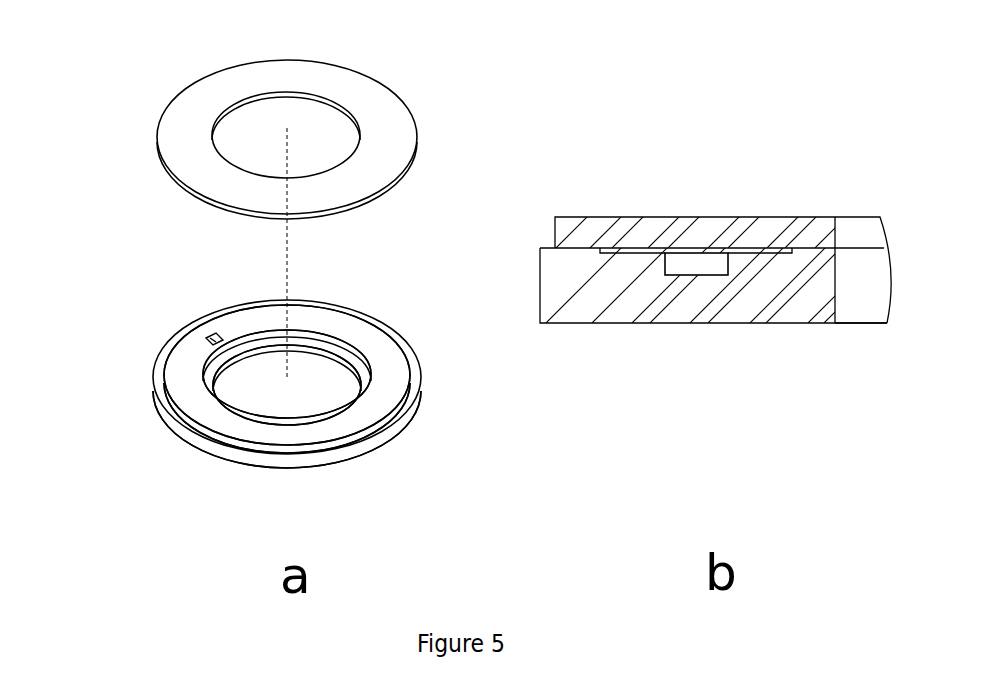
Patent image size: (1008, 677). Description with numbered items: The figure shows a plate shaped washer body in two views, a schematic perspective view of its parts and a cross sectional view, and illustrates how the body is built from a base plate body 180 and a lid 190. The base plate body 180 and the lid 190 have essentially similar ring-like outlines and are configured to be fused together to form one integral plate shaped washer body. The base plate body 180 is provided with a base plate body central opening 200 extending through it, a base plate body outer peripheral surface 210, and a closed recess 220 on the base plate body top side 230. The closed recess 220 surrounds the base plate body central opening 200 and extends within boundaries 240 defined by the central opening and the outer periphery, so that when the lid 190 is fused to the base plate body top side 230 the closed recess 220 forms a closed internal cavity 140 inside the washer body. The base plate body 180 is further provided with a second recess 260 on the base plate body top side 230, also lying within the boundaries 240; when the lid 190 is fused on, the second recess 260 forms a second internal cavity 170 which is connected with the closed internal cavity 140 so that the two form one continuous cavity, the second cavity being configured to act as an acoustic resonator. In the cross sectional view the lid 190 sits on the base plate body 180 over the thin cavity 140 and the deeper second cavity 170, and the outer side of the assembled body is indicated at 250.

The closed internal cavity 140 is at (748, 252).
The second internal cavity 170 is at (697, 263).
The base plate body 180 is at (346, 462).
The lid 190 is at (355, 81).
The base plate body central opening 200 is at (257, 370).
The base plate body outer peripheral surface 210 is at (177, 432).
The closed recess 220 is at (388, 326).
The base plate body top side 230 is at (302, 332).
The boundaries 240 is at (232, 418).
The outer circumferential surface 250 is at (803, 295).
The second recess 260 is at (203, 338).